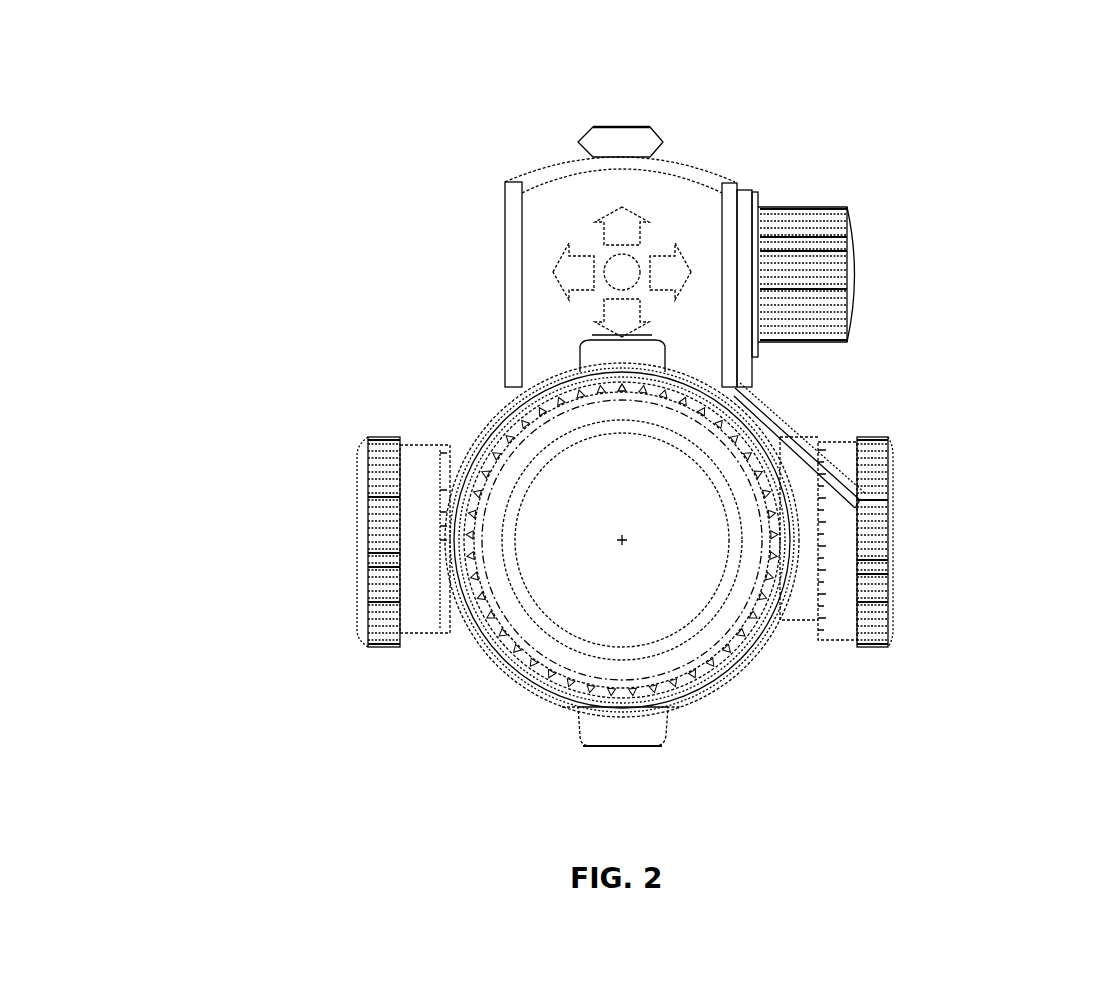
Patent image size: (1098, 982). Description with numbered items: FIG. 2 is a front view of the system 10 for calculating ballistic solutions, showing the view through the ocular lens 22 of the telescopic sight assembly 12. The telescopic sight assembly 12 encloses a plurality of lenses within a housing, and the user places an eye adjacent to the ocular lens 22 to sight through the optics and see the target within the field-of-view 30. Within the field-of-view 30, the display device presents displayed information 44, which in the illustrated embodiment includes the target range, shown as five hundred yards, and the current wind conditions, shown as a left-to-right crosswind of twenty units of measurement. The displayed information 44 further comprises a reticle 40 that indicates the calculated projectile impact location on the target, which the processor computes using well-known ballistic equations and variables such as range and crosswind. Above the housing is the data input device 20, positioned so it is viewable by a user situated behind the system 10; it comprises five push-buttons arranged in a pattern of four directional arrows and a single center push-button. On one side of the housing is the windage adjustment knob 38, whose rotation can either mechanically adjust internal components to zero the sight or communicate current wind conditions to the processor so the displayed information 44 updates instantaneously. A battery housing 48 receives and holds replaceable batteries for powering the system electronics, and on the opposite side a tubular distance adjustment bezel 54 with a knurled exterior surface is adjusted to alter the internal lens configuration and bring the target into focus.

The system 10 is at (792, 120).
The telescopic sight assembly 12 is at (750, 668).
The data input device 20 is at (605, 272).
The ocular lens 22 is at (560, 605).
The field-of-view 30 is at (590, 610).
The windage adjustment knob 38 is at (893, 535).
The reticle 40 is at (620, 553).
The displayed information 44 is at (572, 500).
The battery housing 48 is at (737, 190).
The distance adjustment bezel 54 is at (362, 537).